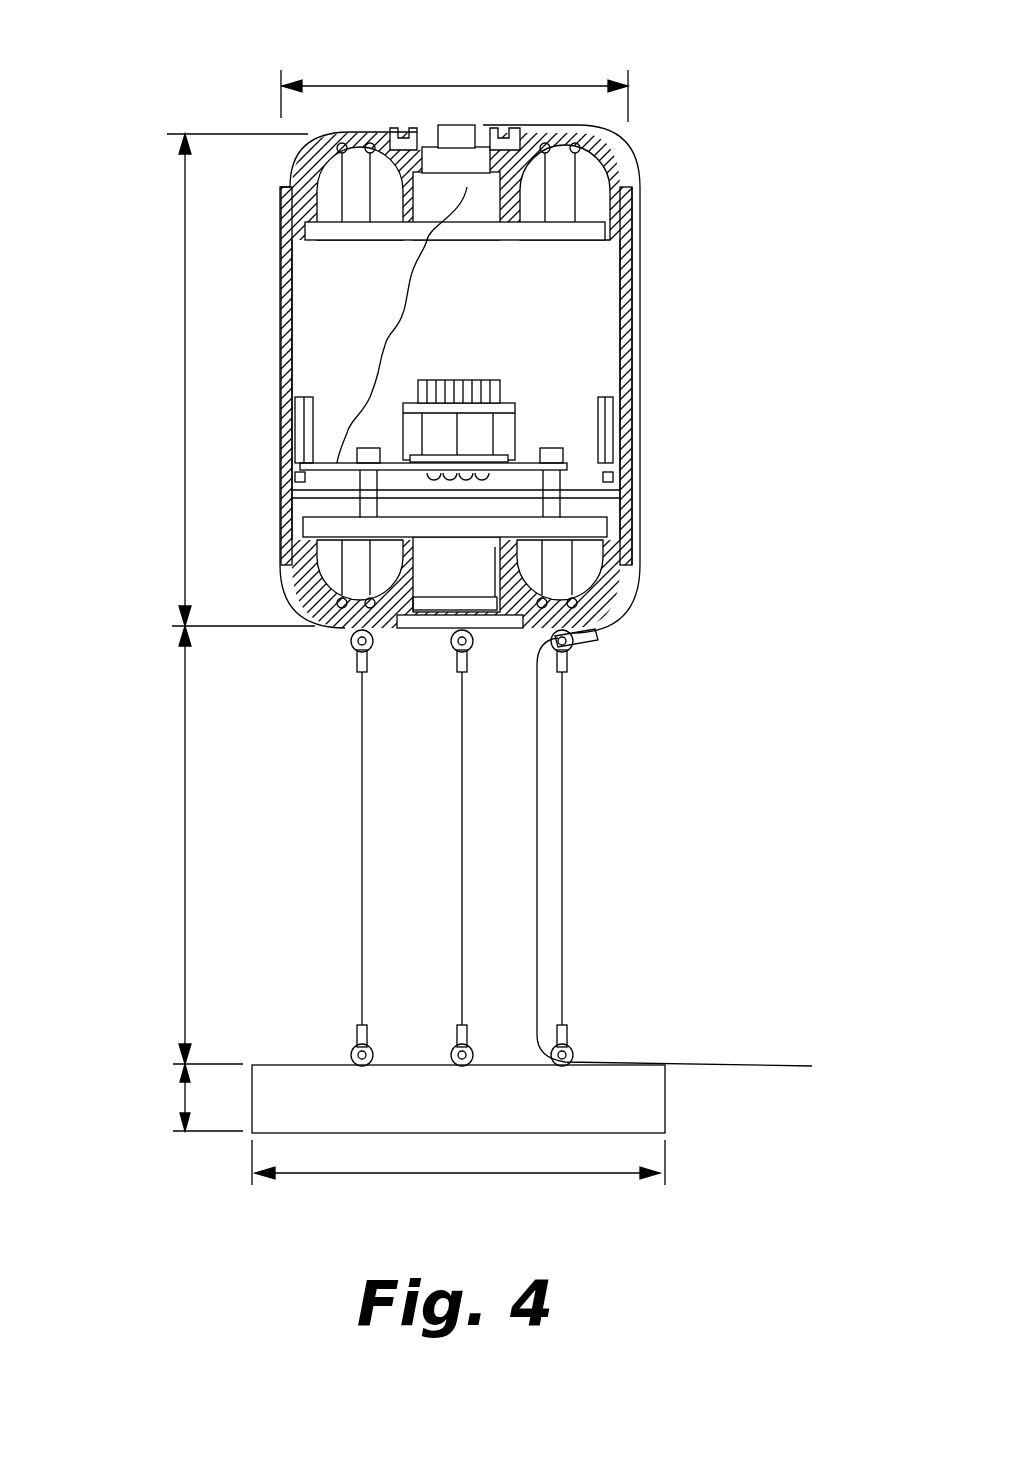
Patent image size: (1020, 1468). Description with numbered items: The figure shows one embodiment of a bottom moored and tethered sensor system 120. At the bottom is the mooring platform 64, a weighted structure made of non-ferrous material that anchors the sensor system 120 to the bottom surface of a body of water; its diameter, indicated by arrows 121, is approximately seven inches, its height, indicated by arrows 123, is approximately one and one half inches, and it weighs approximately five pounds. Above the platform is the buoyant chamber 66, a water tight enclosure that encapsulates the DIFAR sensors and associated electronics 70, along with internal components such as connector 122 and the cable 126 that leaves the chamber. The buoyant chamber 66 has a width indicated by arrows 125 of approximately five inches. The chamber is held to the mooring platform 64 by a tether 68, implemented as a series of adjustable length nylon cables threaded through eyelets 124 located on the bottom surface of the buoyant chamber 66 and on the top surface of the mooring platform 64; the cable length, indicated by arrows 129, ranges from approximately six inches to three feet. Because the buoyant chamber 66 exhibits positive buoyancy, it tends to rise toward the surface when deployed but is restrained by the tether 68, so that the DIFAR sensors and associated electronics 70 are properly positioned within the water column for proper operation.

The buoyant chamber 66 is at (660, 268).
The connector 122 is at (515, 405).
The DIFAR sensors and associated electronics 70 is at (583, 575).
The eyelets 124 is at (353, 643).
The tether 68 is at (362, 805).
The cable 126 is at (792, 1062).
The mooring platform 64 is at (666, 1100).
The width of buoyant chamber 125 is at (457, 86).
The bottom moored and tethered sensor system 120 is at (182, 353).
The tether length 129 is at (185, 818).
The height of mooring platform 123 is at (182, 1098).
The diameter of mooring platform 121 is at (452, 1173).